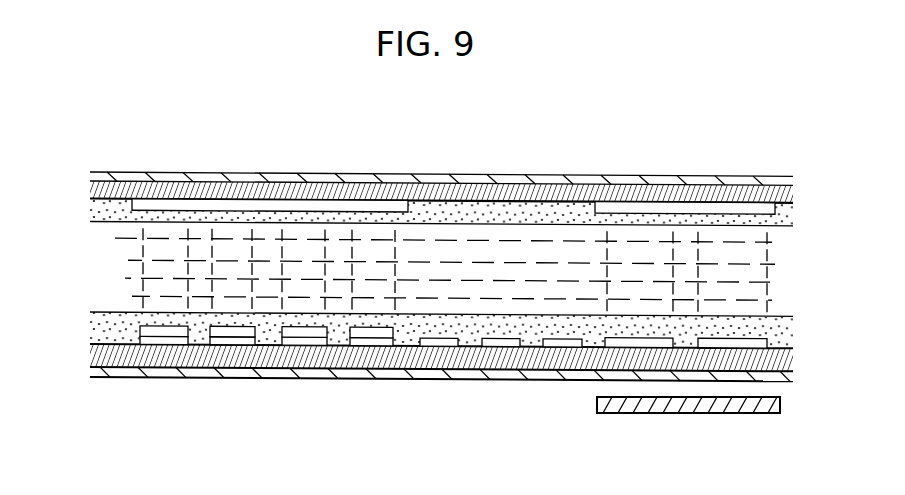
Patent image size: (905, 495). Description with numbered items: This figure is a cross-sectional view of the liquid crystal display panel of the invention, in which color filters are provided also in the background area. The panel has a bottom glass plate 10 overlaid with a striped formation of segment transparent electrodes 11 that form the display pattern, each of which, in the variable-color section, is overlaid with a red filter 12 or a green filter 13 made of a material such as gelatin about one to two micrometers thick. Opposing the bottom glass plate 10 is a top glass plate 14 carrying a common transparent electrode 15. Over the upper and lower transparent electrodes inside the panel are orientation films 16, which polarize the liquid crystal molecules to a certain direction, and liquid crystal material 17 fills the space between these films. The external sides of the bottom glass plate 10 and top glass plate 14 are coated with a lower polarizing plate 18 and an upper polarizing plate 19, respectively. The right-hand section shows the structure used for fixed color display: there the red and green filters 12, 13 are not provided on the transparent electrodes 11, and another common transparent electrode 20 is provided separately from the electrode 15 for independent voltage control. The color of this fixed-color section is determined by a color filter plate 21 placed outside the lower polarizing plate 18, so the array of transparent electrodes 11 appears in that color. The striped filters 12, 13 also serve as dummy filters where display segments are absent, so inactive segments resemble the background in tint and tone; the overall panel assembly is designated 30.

The bottom glass plate 10 is at (168, 370).
The segment transparent electrodes 11 is at (145, 336).
The red filter 12 is at (180, 326).
The green filter 13 is at (232, 340).
The top glass plate 14 is at (292, 196).
The common transparent electrode 15 is at (378, 205).
The orientation films 16 is at (100, 213).
The liquid crystal material 17 is at (123, 267).
The lower polarizing plate 18 is at (518, 373).
The upper polarizing plate 19 is at (128, 172).
The common transparent electrode 20 is at (690, 205).
The color filter plate 21 is at (690, 413).
The liquid crystal display device 30 is at (455, 166).